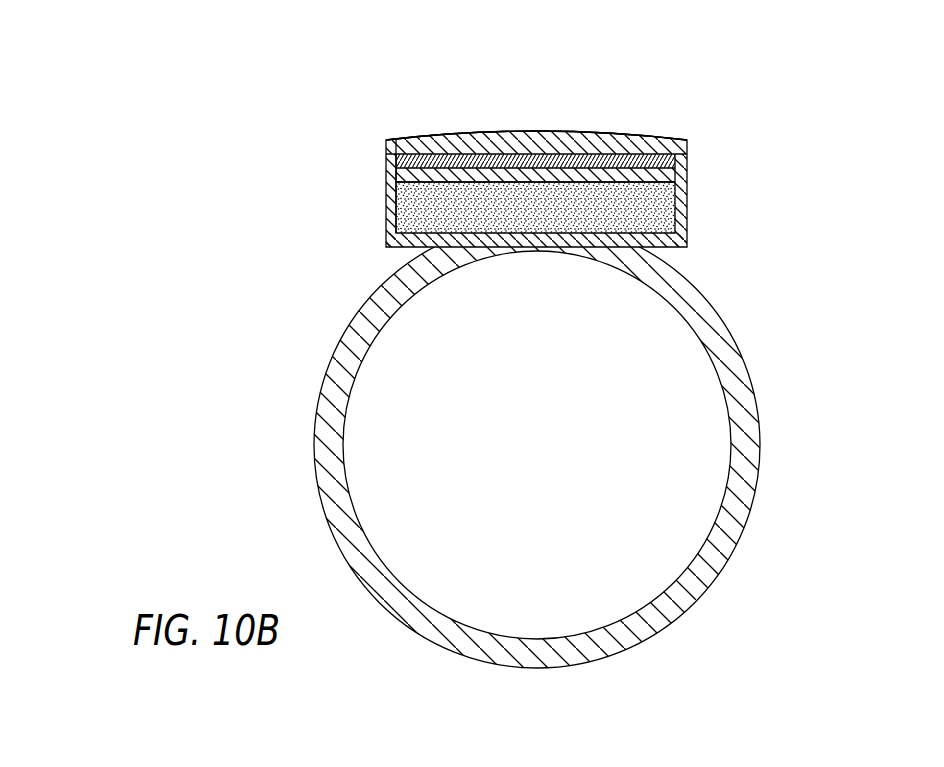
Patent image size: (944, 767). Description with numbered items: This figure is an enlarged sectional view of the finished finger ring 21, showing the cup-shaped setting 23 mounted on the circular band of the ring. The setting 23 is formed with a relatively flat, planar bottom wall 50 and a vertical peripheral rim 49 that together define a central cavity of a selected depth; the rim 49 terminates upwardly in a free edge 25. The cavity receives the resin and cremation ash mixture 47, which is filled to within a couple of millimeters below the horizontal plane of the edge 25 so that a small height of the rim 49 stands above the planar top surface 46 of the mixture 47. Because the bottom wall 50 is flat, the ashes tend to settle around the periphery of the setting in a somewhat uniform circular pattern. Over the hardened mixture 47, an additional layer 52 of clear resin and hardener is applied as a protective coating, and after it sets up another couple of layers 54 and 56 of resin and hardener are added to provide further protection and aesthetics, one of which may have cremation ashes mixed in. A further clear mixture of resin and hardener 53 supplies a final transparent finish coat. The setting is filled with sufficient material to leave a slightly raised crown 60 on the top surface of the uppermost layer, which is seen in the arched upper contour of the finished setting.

The finger ring 21 is at (305, 312).
The setting 23 is at (580, 150).
The free edge 25 is at (681, 140).
The planar top surface 46 is at (543, 177).
The resin and cremation ash mixture 47 is at (422, 206).
The peripheral rim 49 is at (398, 168).
The planar bottom wall 50 is at (658, 232).
The additional layer 52 is at (663, 173).
The clear mixture of resin and hardener 53 is at (467, 132).
The layer 54 is at (665, 160).
The layer 56 is at (653, 143).
The crown 60 is at (534, 130).